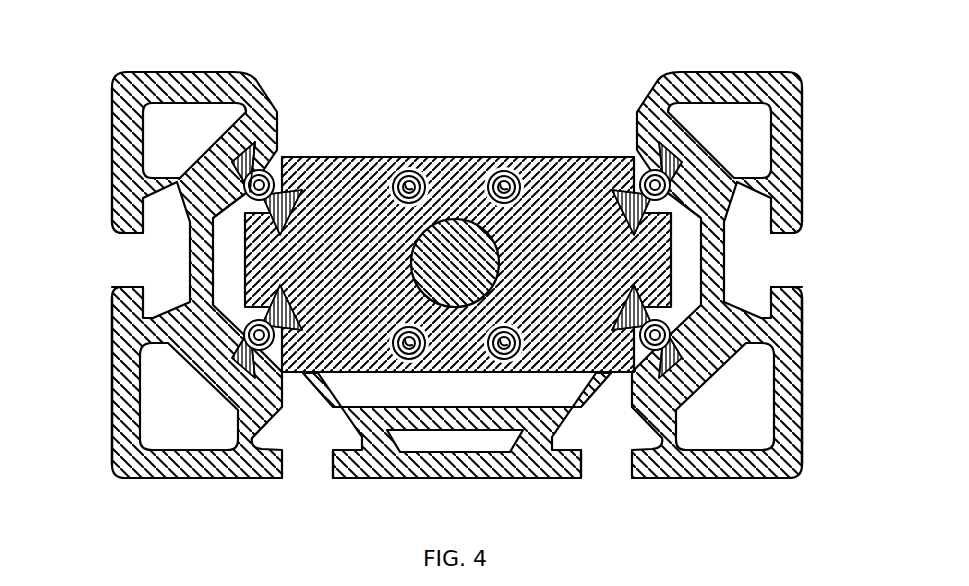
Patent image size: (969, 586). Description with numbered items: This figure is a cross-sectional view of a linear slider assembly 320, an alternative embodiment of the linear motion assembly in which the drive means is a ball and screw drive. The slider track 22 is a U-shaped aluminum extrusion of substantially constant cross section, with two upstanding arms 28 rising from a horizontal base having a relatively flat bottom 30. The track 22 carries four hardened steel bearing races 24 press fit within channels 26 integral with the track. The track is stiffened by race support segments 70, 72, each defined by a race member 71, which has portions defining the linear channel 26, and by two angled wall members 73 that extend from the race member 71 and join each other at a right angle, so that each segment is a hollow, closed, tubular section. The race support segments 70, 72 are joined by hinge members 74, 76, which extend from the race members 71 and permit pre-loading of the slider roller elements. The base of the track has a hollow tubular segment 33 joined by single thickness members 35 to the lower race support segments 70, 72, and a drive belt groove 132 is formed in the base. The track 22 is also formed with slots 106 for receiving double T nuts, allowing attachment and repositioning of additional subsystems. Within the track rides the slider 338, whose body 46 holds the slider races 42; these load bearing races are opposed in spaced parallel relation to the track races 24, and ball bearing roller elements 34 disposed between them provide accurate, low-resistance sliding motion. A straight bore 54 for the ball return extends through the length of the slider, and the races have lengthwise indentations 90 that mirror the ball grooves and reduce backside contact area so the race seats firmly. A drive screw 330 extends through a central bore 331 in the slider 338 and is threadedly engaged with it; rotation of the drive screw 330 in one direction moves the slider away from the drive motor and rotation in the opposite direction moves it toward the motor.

The slider track 22 is at (460, 284).
The bearing races 24 is at (250, 150).
The channels 26 is at (275, 153).
The upstanding arms 28 is at (113, 400).
The bottom 30 is at (447, 478).
The hollow tubular segment 33 is at (466, 432).
The ball bearing roller elements 34 is at (420, 238).
The single thickness members 35 is at (345, 398).
The slider races 42 is at (368, 157).
The body 46 is at (562, 157).
The straight bore 54 is at (398, 157).
The race support segment 70 is at (113, 105).
The race member 71 is at (218, 142).
The race support segment 72 is at (175, 478).
The angled wall members 73 is at (200, 72).
The hinge member 74 is at (148, 245).
The hinge member 76 is at (768, 255).
The indentations 90 is at (256, 349).
The slots 106 is at (113, 292).
The drive belt groove 132 is at (441, 398).
The linear slider assembly 320 is at (407, 83).
The drive screw 330 is at (458, 291).
The central bore 331 is at (490, 296).
The slider 338 is at (590, 157).